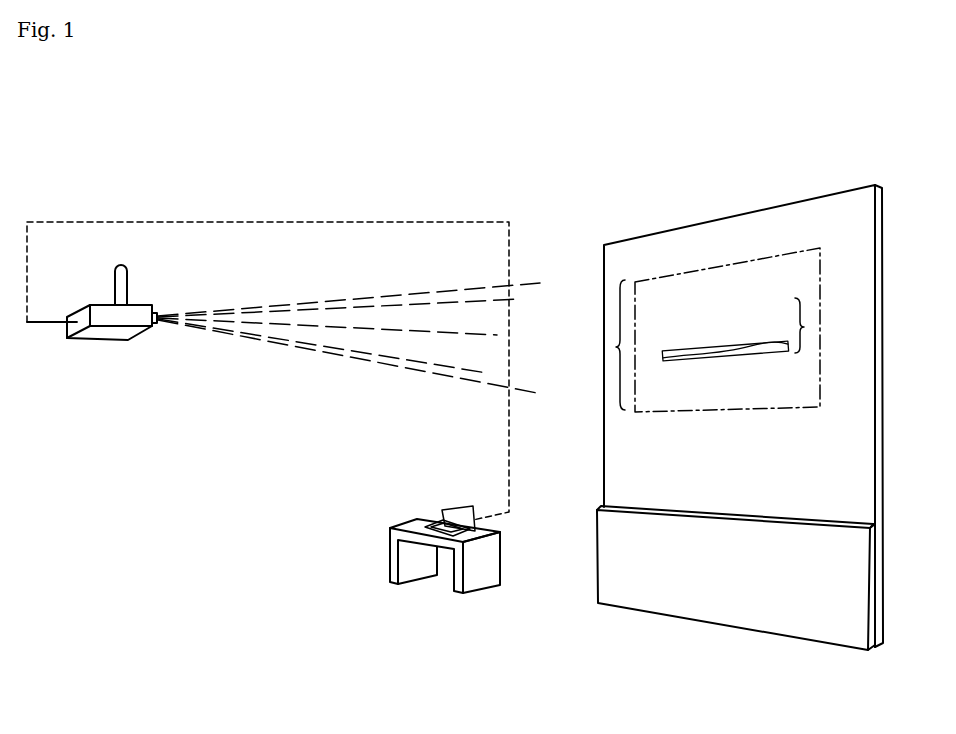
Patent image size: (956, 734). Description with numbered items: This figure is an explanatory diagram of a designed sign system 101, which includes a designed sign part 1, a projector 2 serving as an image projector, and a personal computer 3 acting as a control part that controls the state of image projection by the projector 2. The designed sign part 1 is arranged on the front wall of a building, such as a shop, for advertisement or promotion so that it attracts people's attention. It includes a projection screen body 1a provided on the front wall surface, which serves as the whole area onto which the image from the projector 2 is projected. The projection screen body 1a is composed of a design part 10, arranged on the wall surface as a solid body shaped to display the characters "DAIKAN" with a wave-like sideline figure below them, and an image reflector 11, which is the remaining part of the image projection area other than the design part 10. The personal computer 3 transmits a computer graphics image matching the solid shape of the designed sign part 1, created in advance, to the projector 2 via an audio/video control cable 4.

The designed sign system 101 is at (316, 638).
The designed sign part 1 is at (791, 226).
The projection screen body 1a is at (617, 347).
The design part 10 is at (803, 327).
The image reflector 11 is at (807, 278).
The projector 2 is at (115, 315).
The personal computer 3 is at (441, 509).
The audio/video control cable 4 is at (283, 221).